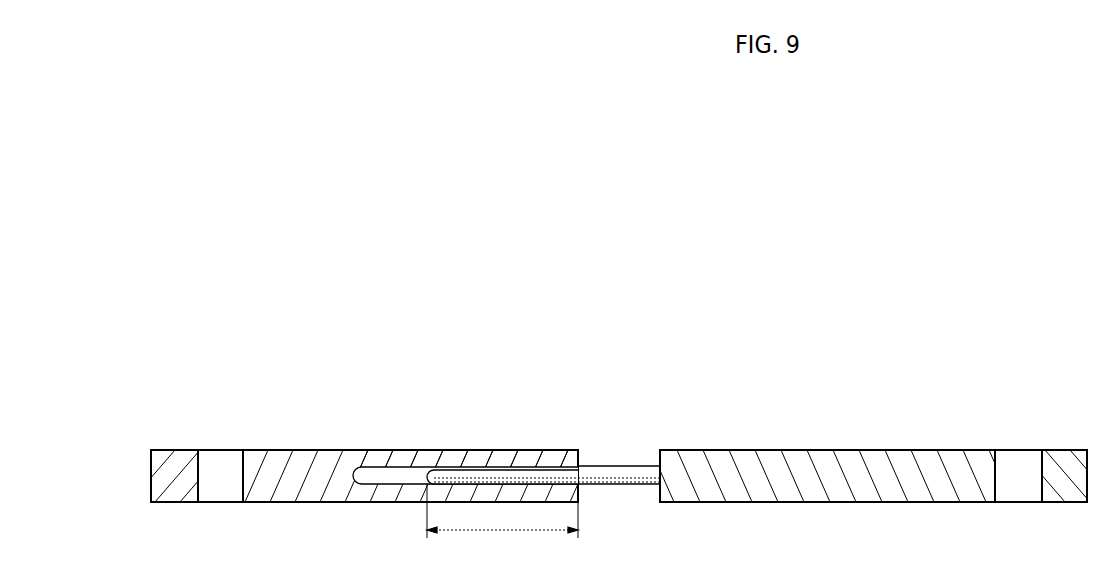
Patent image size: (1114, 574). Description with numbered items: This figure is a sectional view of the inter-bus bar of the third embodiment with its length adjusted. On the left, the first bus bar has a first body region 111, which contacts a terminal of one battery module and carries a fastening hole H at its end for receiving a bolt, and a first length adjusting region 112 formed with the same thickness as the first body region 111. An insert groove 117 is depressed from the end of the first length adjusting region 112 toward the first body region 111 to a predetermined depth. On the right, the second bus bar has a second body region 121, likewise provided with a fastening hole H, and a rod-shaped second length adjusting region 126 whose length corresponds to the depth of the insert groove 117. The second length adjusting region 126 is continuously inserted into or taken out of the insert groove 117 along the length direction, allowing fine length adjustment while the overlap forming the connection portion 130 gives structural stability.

The first body region 111 is at (304, 462).
The first length adjusting region 112 is at (466, 458).
The insert groove 117 is at (391, 476).
The second length adjusting region 126 is at (613, 472).
The second body region 121 is at (856, 462).
The connection portion 130 is at (502, 523).
The fastening hole H is at (220, 466).